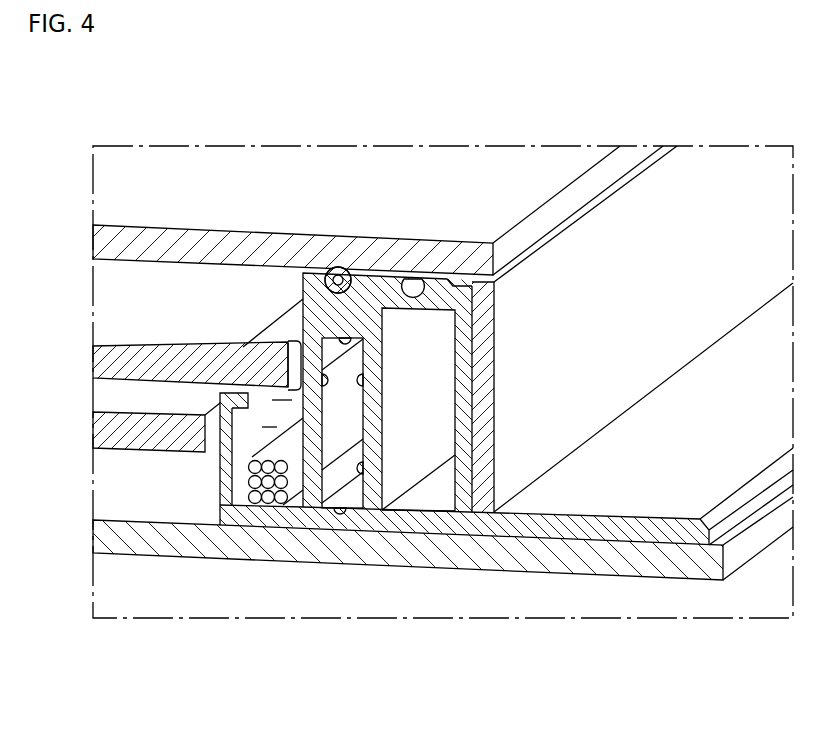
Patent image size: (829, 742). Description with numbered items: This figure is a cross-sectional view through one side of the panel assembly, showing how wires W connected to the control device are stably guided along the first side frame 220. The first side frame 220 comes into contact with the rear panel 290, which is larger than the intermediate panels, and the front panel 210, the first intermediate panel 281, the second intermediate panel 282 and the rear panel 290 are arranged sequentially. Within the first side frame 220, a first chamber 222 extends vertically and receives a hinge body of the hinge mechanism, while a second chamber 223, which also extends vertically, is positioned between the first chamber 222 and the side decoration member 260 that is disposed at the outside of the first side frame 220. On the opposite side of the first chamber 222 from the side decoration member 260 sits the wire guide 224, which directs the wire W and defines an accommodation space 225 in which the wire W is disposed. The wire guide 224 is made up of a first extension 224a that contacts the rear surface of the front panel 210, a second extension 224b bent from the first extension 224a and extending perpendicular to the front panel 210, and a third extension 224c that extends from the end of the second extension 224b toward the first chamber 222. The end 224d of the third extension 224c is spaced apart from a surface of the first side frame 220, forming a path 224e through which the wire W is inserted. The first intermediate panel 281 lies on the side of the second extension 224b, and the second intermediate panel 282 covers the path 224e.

The rear panel 290 is at (413, 172).
The first side frame 220 is at (454, 552).
The first chamber 222 is at (348, 493).
The second chamber 223 is at (428, 497).
The side decoration member 260 is at (638, 497).
The front panel 210 is at (100, 546).
The second intermediate panel 282 is at (100, 352).
The first intermediate panel 281 is at (100, 432).
The wire guide 224 is at (229, 554).
The first extension 224a is at (265, 518).
The second extension 224b is at (224, 472).
The third extension 224c is at (220, 398).
The end of the third extension 224d is at (288, 347).
The path 224e is at (283, 398).
The accommodation space 225 is at (272, 429).
The wires W is at (284, 503).